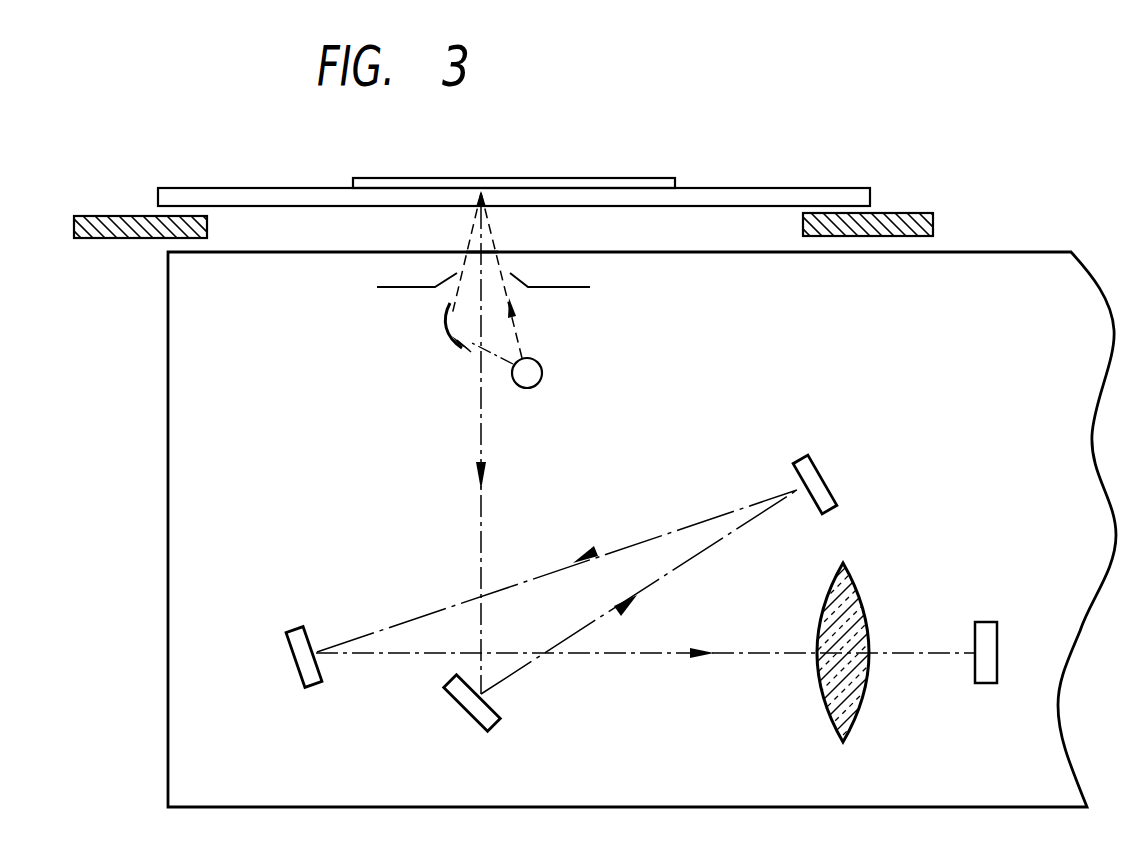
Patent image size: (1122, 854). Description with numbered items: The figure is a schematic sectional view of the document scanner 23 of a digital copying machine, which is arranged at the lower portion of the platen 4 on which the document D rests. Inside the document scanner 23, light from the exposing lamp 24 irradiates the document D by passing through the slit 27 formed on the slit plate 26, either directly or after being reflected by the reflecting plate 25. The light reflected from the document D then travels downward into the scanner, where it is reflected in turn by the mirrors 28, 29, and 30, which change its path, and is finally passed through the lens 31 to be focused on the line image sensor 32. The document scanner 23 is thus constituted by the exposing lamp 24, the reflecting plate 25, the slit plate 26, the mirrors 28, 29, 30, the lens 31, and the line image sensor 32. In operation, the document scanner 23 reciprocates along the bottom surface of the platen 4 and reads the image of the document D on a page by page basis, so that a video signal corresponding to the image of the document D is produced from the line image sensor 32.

The document D is at (555, 178).
The platen 4 is at (326, 208).
The document scanner 23 is at (727, 392).
The exposing lamp 24 is at (542, 373).
The reflecting plate 25 is at (455, 341).
The slit plate 26 is at (390, 288).
The slit 27 is at (474, 262).
The mirror 28 is at (463, 715).
The mirror 29 is at (834, 465).
The mirror 30 is at (292, 657).
The lens 31 is at (857, 583).
The line image sensor 32 is at (990, 621).